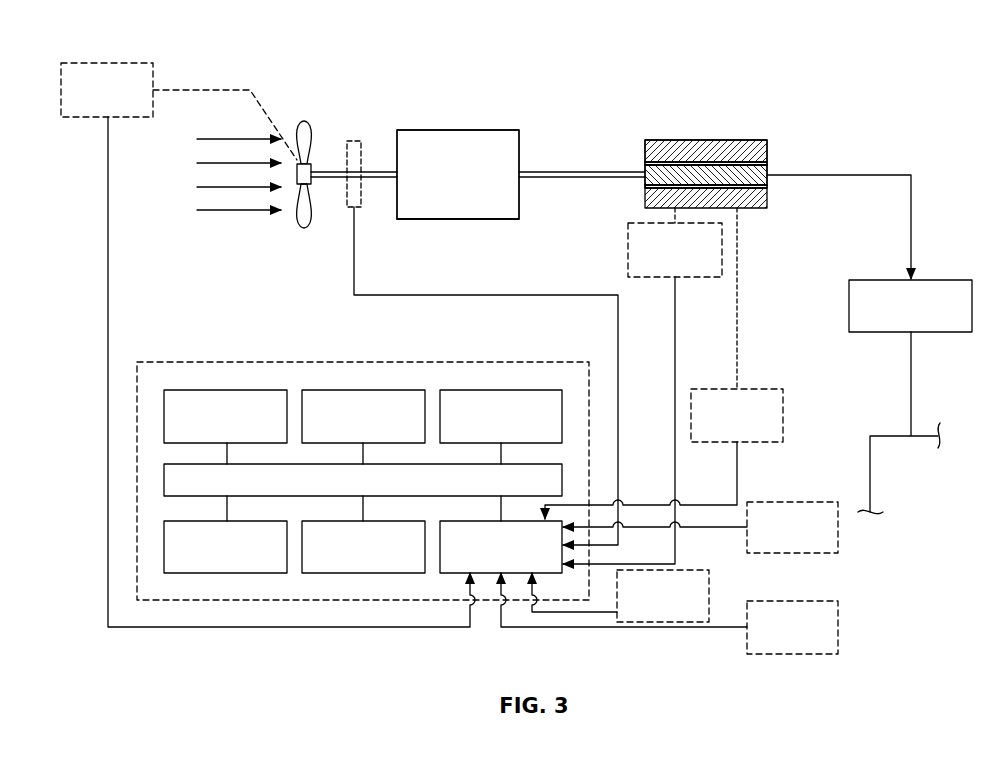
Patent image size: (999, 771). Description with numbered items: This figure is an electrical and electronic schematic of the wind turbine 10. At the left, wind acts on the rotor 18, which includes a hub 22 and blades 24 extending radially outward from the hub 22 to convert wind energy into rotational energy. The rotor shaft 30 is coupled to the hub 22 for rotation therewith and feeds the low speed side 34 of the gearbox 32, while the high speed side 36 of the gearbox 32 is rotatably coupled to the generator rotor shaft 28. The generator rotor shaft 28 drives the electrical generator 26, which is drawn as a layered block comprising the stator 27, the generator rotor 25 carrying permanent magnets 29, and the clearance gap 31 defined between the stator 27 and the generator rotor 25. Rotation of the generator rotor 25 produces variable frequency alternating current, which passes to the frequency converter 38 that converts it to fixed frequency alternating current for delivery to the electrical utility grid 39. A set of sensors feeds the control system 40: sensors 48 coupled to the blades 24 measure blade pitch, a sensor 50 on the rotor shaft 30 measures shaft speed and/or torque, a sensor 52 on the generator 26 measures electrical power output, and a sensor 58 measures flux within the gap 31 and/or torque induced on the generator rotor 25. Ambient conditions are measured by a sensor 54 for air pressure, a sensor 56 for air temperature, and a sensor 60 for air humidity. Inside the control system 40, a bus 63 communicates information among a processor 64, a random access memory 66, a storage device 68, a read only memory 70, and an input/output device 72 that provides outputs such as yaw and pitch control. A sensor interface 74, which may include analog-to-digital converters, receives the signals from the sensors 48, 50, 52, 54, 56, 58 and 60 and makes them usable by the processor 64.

The wind turbine 10 is at (70, 56).
The rotor 18 is at (292, 133).
The hub 22 is at (309, 190).
The blades 24 is at (311, 127).
The generator rotor 25 is at (603, 189).
The electrical generator 26 is at (718, 135).
The stator 27 is at (743, 147).
The generator rotor shaft 28 is at (544, 169).
The permanent magnets 29 is at (768, 167).
The rotor shaft 30 is at (367, 170).
The clearance gap 31 is at (643, 163).
The gearbox 32 is at (432, 220).
The low speed side 34 is at (412, 127).
The high speed side 36 is at (487, 127).
The frequency converter 38 is at (896, 317).
The electrical utility grid 39 is at (870, 478).
The control system 40 is at (181, 362).
The sensors 48 is at (93, 102).
The sensor 50 is at (354, 141).
The sensor 52 is at (661, 262).
The sensor 54 is at (778, 639).
The sensor 56 is at (649, 608).
The sensor 58 is at (723, 428).
The sensor 60 is at (778, 539).
The bus 63 is at (349, 492).
The processor 64 is at (240, 429).
The random access memory 66 is at (378, 429).
The storage device 68 is at (240, 559).
The read only memory 70 is at (487, 429).
The input/output device 72 is at (378, 559).
The sensor interface 74 is at (487, 559).